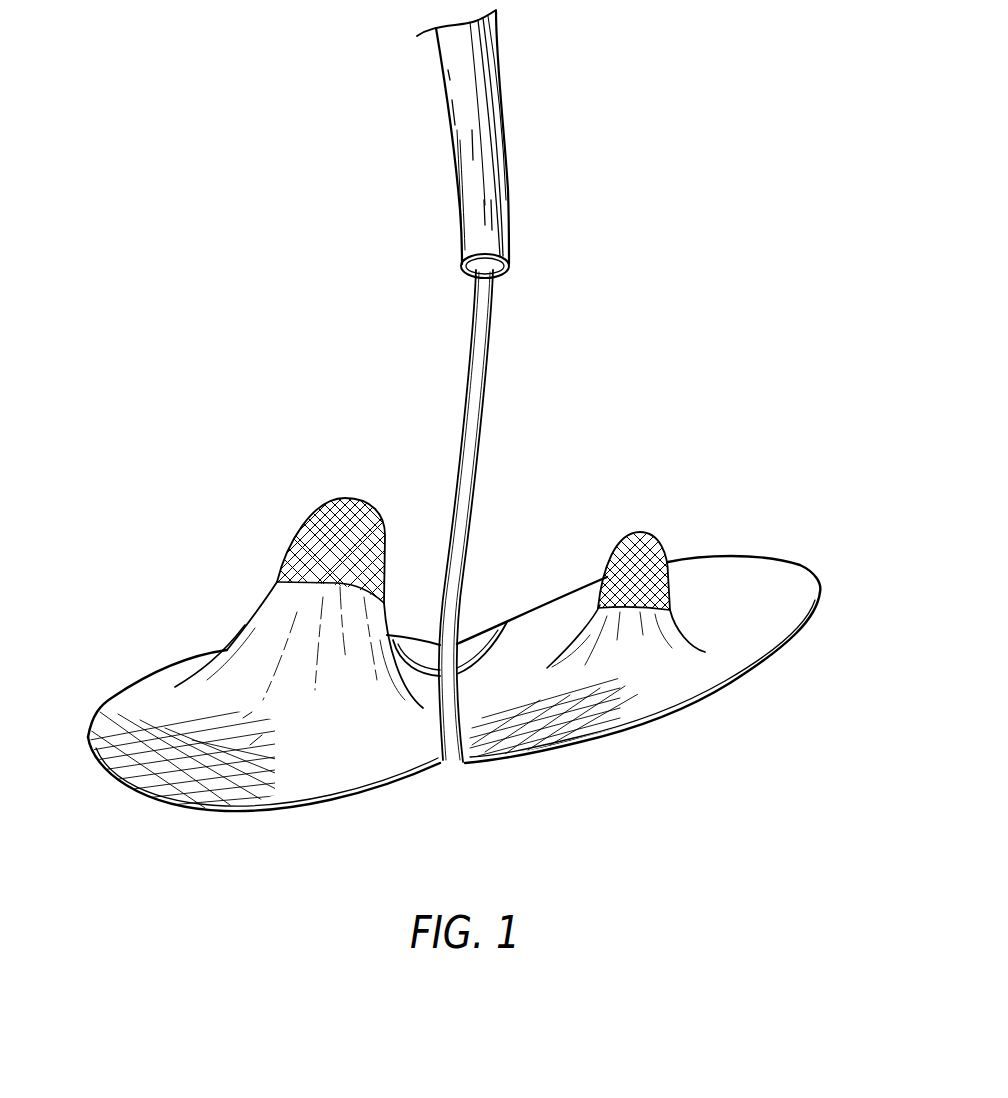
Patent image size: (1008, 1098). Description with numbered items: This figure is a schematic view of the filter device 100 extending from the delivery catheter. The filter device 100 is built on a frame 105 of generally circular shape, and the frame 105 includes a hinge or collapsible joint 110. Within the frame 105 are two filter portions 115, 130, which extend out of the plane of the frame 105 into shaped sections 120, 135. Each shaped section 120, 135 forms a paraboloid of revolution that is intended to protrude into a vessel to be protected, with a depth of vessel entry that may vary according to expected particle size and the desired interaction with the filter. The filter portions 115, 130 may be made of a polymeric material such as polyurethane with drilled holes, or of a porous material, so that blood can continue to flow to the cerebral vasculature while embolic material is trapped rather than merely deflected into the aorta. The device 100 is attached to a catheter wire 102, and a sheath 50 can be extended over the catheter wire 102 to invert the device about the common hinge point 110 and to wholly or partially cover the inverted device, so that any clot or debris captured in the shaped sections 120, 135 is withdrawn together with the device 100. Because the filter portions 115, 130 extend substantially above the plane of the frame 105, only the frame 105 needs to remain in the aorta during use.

The sheath 50 is at (497, 118).
The catheter wire 102 is at (491, 373).
The filter device 100 is at (263, 812).
The frame 105 is at (625, 733).
The hinge or collapsible joint 110 is at (465, 633).
The filter portion 115 is at (131, 732).
The shaped section 120 is at (298, 528).
The filter portion 130 is at (793, 610).
The shaped section 135 is at (663, 528).